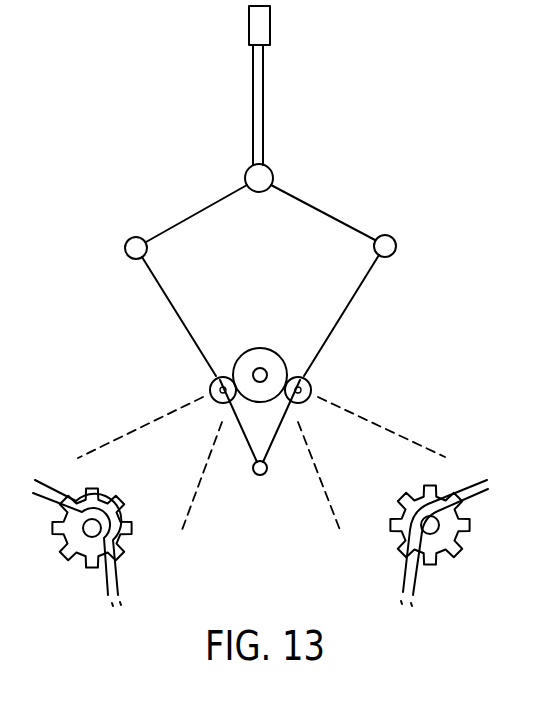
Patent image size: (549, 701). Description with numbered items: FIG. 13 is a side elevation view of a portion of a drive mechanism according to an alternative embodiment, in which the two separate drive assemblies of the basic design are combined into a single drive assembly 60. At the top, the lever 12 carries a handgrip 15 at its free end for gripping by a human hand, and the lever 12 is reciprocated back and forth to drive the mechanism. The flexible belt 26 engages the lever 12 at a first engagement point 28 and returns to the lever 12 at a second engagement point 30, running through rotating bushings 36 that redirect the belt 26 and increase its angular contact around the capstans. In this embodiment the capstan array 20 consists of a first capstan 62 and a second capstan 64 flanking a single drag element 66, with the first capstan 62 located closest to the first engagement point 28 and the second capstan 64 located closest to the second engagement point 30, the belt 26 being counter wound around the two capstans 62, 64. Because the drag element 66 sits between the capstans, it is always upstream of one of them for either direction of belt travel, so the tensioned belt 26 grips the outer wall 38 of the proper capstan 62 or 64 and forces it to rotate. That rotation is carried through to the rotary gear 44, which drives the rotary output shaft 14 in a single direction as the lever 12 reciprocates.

The lever 12 is at (264, 73).
The rotary output shaft 14 is at (255, 370).
The handgrip 15 is at (271, 25).
The capstan array 20 is at (287, 453).
The first flexible belt 26 is at (190, 203).
The first engagement point 28 is at (281, 153).
The second engagement point 30 is at (241, 155).
The rotating bushings 36 is at (127, 260).
The outer wall 38 is at (92, 536).
The rotary gear 44 is at (274, 358).
The single drive assembly 60 is at (443, 343).
The first capstan 62 is at (310, 383).
The second capstan 64 is at (211, 384).
The drag element 66 is at (257, 476).